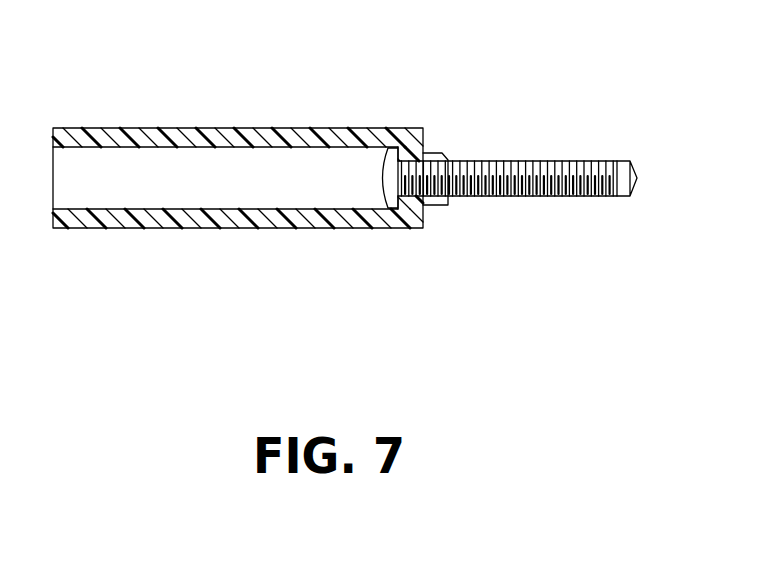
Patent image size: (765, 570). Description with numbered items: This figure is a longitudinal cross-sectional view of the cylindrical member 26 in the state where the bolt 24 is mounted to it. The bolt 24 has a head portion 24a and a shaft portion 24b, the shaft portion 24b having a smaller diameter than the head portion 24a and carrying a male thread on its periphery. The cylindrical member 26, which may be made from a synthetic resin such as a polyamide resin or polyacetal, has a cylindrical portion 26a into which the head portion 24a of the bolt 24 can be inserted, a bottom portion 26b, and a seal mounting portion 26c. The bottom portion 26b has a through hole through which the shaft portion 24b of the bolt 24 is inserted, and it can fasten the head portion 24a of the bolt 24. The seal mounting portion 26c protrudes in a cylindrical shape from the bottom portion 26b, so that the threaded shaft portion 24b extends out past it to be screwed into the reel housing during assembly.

The cylindrical member 26 is at (342, 112).
The cylindrical portion 26a is at (190, 223).
The bottom portion 26b is at (412, 227).
The seal mounting portion 26c is at (427, 198).
The bolt 24 is at (483, 160).
The head portion 24a is at (388, 180).
The shaft portion 24b is at (558, 161).